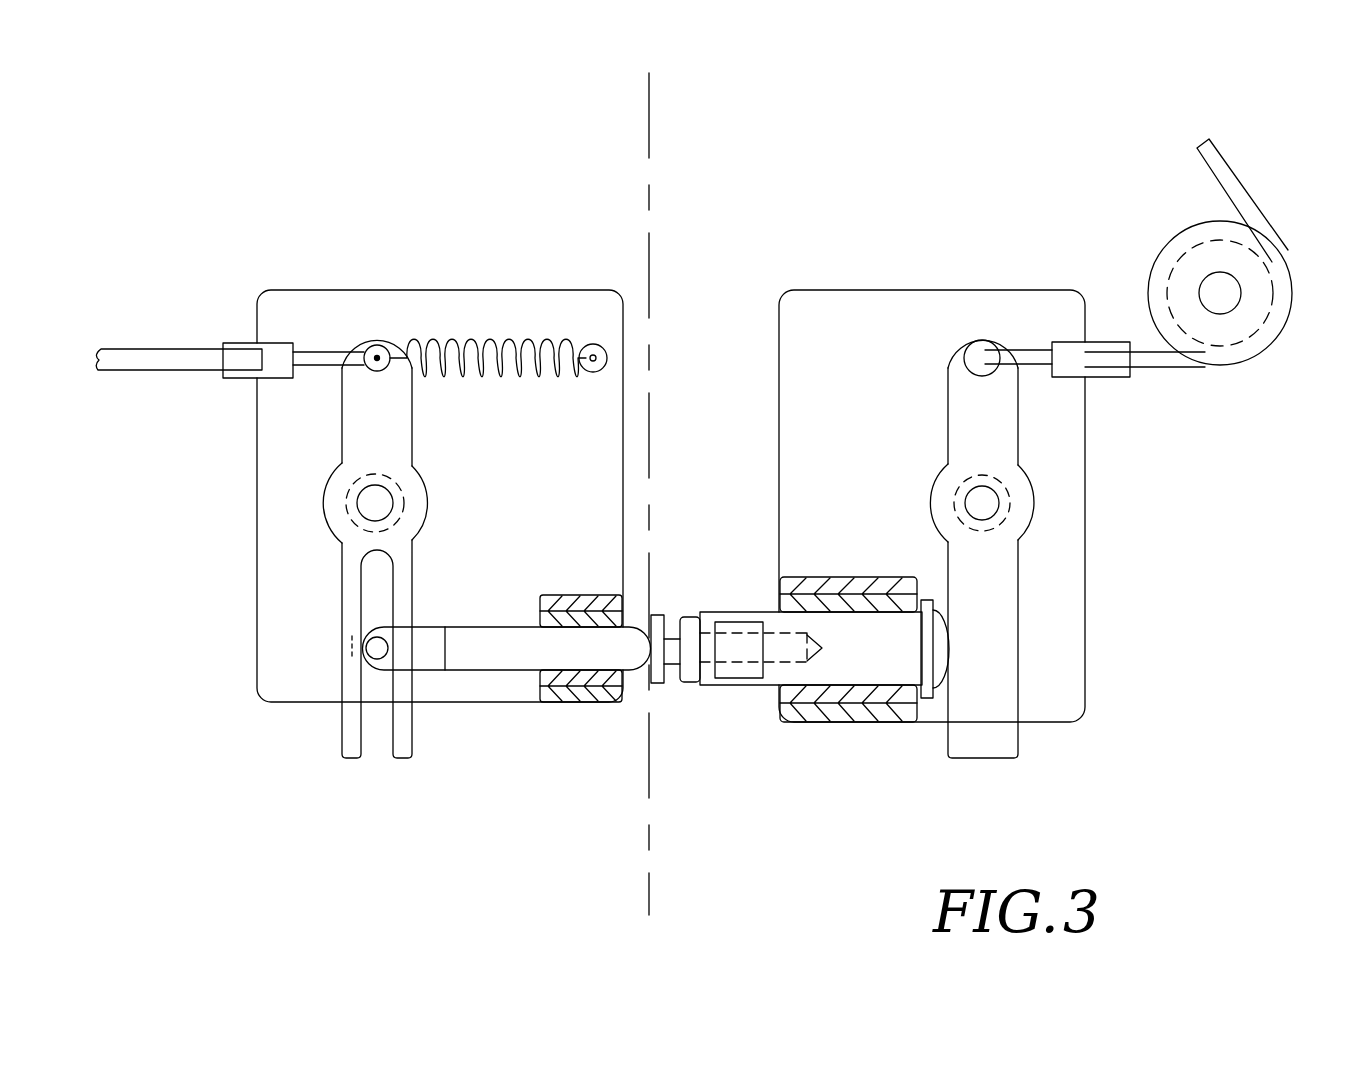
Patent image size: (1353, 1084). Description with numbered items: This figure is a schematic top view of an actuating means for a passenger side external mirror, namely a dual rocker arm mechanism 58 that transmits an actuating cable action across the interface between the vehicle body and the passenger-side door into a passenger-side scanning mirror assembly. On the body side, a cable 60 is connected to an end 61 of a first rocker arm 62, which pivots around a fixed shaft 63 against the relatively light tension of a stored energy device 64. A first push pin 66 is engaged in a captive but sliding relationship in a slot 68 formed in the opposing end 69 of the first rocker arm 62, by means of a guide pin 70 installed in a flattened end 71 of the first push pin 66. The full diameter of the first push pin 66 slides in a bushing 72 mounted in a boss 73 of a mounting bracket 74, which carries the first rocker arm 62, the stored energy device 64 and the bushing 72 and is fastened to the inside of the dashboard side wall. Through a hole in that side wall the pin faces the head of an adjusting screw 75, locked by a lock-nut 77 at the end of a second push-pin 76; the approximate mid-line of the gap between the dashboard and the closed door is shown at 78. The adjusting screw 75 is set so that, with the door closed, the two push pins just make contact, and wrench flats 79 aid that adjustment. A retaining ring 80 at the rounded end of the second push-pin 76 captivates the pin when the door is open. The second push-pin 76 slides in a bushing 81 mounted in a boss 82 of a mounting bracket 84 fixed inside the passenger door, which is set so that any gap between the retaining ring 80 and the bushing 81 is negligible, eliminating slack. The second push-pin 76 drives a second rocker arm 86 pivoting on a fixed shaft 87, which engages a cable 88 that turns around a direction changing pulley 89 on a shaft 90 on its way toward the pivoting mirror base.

The dual rocker arm mechanism 58 is at (397, 409).
The cable 60 is at (180, 348).
The end of first rocker arm 61 is at (400, 330).
The first rocker arm 62 is at (422, 440).
The fixed shaft 63 is at (358, 500).
The stored energy device 64 is at (522, 340).
The first push pin 66 is at (490, 652).
The slot 68 is at (365, 740).
The opposing end of first rocker arm 69 is at (343, 641).
The guide pin 70 is at (367, 658).
The flattened end 71 is at (423, 652).
The bushing 72 is at (538, 680).
The boss 73 is at (577, 705).
The mounting bracket 74 is at (283, 290).
The adjusting screw 75 is at (674, 628).
The second push-pin 76 is at (757, 690).
The lock-nut 77 is at (688, 616).
The mid-line of gap 78 is at (651, 143).
The wrench flats 79 is at (733, 680).
The retaining ring 80 is at (930, 700).
The bushing 81 is at (868, 700).
The boss 82 is at (838, 723).
The mounting bracket 84 is at (893, 290).
The second rocker arm 86 is at (1019, 618).
The fixed shaft 87 is at (985, 500).
The cable 88 is at (1215, 180).
The direction changing pulley 89 is at (1162, 265).
The shaft 90 is at (1238, 307).